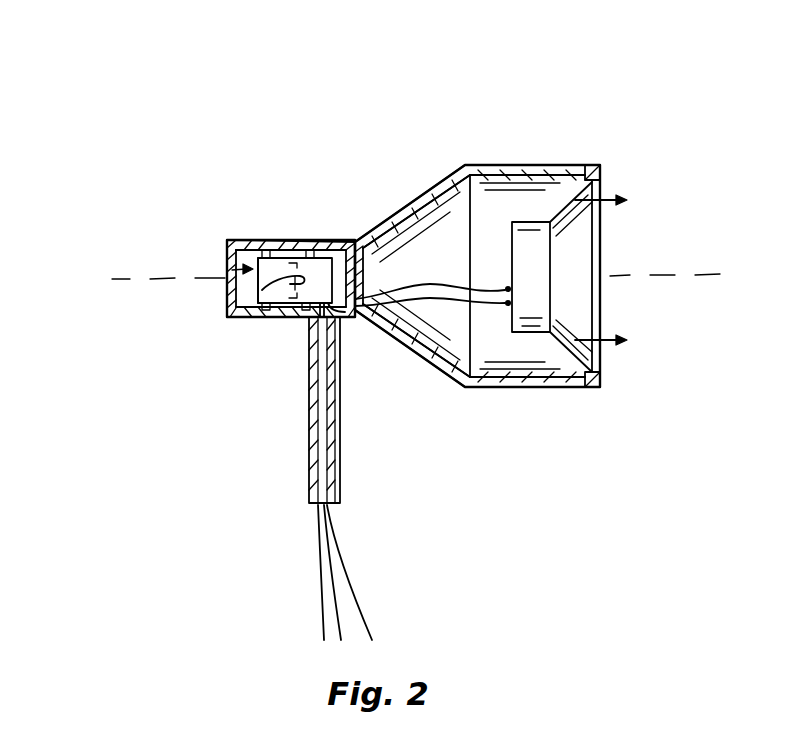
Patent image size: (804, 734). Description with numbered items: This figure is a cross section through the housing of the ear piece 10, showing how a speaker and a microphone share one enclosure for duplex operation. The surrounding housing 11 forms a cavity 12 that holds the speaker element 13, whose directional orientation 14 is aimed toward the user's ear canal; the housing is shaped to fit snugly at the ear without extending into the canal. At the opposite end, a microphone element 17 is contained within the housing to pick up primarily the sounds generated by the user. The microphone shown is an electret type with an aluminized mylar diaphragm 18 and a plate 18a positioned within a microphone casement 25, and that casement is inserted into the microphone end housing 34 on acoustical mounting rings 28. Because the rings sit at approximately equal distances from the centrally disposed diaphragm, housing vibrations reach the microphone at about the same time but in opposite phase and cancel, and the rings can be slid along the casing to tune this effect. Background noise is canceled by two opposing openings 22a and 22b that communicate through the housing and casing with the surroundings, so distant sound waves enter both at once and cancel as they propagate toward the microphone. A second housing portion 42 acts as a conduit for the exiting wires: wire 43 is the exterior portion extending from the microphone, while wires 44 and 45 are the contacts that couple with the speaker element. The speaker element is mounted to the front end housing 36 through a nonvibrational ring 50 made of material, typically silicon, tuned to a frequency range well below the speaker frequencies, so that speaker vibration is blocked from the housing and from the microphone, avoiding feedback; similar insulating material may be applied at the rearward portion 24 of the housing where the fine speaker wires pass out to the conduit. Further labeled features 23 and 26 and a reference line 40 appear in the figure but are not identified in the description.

The ear piece 10 is at (582, 157).
The housing 11 is at (513, 168).
The cavity 12 is at (484, 213).
The speaker element 13 is at (570, 267).
The directional orientation 14 is at (610, 194).
The microphone element 17 is at (224, 260).
The aluminized mylar diaphragm 18 is at (262, 317).
The plate 18a is at (226, 288).
The opening 22a is at (247, 312).
The opening 22b is at (337, 242).
The upper slanted horn wall 23 is at (418, 193).
The rearward portion of the housing 24 is at (351, 243).
The microphone casement 25 is at (318, 243).
The lower slanted horn wall 26 is at (357, 303).
The acoustical mounting rings 28 is at (310, 250).
The microphone end housing 34 is at (262, 290).
The end housing 36 is at (567, 390).
The central axis 40 is at (414, 277).
The second housing portion 42 is at (342, 423).
The wire 43 is at (320, 548).
The wire 44 is at (343, 615).
The wire 45 is at (343, 553).
The nonvibrational ring 50 is at (600, 166).